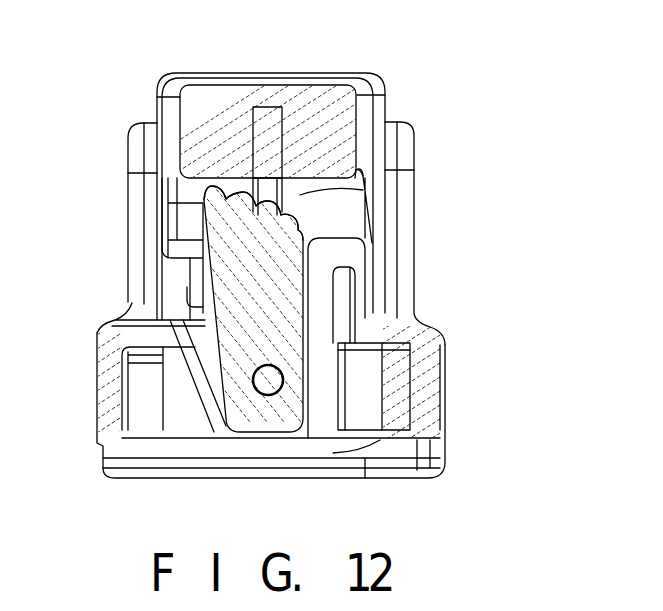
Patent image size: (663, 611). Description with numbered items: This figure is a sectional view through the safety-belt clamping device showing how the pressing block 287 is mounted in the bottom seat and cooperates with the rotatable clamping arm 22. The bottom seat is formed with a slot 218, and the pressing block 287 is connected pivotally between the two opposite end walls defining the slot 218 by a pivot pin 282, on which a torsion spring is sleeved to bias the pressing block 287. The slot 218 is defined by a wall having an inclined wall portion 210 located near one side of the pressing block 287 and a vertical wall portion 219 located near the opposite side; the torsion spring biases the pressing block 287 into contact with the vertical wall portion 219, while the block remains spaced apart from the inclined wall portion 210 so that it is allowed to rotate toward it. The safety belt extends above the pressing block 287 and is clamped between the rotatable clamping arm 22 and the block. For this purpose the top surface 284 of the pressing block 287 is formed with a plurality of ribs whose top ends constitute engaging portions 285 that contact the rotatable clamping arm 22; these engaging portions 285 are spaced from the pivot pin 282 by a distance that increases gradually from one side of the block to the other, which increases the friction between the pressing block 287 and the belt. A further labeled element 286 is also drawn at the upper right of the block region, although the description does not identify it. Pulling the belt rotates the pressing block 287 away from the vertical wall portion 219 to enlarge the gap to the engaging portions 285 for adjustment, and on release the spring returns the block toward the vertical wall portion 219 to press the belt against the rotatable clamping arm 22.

The rotatable clamping arm 22 is at (248, 70).
The top surface 284 is at (259, 205).
The engaging portions 285 is at (217, 208).
The engaging portion 286 is at (305, 202).
The pressing block 287 is at (240, 295).
The vertical wall portion 219 is at (322, 289).
The slot 218 is at (180, 320).
The inclined wall portion 210 is at (125, 357).
The pivot pin 282 is at (270, 387).